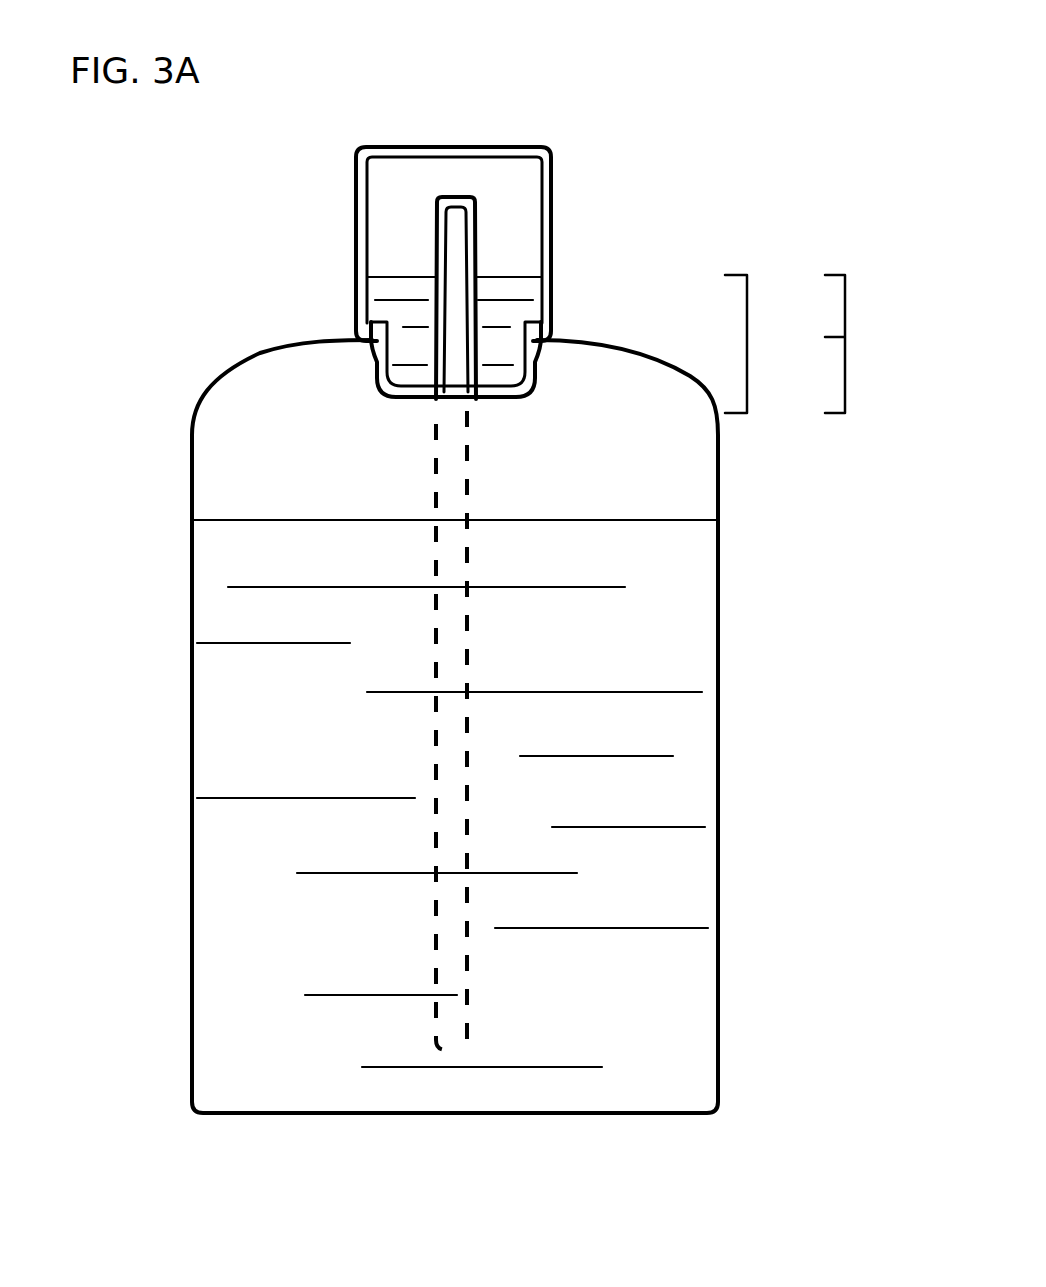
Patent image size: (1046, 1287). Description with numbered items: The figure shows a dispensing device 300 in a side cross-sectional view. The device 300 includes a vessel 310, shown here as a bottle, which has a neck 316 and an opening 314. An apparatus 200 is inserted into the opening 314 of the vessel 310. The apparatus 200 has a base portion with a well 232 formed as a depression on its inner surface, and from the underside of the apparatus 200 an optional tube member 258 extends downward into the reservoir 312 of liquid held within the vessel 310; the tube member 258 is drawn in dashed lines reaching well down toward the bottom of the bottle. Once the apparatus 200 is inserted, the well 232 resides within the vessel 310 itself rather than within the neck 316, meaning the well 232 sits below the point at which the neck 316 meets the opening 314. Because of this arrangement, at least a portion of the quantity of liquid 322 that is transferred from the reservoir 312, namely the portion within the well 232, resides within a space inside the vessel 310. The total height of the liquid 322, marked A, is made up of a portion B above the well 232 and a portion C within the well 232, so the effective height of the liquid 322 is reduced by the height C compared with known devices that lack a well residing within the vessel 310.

The dispensing device 300 is at (736, 113).
The vessel 310 is at (197, 390).
The reservoir 312 is at (243, 682).
The opening 314 is at (540, 357).
The neck 316 is at (543, 197).
The liquid 322 is at (392, 288).
The well 232 is at (410, 377).
The tube member 258 is at (455, 568).
The apparatus 200 is at (398, 243).